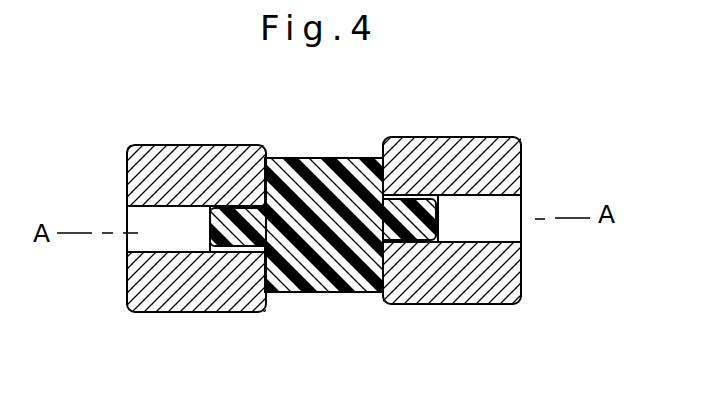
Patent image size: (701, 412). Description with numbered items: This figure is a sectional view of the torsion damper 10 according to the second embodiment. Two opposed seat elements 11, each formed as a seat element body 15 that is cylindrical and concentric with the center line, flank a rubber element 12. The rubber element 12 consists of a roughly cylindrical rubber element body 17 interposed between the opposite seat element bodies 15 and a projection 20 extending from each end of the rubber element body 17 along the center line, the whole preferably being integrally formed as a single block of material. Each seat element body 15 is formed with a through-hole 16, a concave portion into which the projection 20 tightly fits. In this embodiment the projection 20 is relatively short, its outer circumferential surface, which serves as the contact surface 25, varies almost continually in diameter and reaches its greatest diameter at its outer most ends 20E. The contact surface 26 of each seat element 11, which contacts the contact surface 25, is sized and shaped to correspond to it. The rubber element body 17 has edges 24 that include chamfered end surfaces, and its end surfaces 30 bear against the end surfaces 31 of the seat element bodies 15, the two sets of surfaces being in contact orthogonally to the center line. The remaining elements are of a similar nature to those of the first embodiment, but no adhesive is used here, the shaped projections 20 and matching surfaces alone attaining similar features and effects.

The torsion damper 10 is at (148, 128).
The seat element 11 is at (127, 146).
The rubber element 12 is at (330, 155).
The seat element body 15 is at (142, 293).
The through-hole 16 is at (503, 227).
The rubber element body 17 is at (300, 290).
The projection 20 is at (438, 217).
The outer most end 20E is at (438, 230).
The edge 24 is at (377, 155).
The contact surface 25 is at (263, 205).
The contact surface 26 is at (210, 210).
The end surface 30 is at (264, 166).
The end surface 31 is at (283, 158).